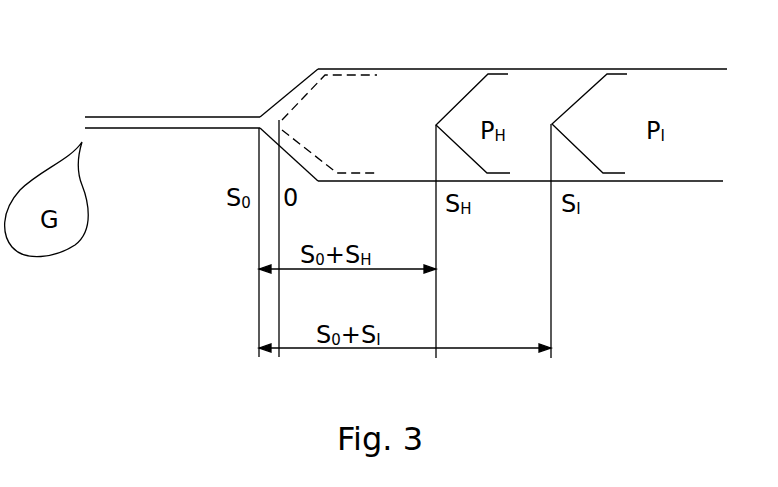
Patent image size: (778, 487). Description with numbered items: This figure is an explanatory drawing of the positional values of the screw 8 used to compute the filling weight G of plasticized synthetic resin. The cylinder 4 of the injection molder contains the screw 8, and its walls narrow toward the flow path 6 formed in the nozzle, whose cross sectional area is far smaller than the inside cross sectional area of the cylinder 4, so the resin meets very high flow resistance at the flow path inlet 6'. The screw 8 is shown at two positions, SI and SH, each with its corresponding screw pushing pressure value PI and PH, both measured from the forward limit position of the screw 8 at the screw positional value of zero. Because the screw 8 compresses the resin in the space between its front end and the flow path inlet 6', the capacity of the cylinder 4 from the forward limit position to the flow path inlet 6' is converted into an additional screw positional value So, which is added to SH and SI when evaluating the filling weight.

The flow path 6 is at (172, 83).
The flow path inlet 6' is at (283, 105).
The cylinder 4 is at (422, 83).
The screw 8 is at (503, 82).